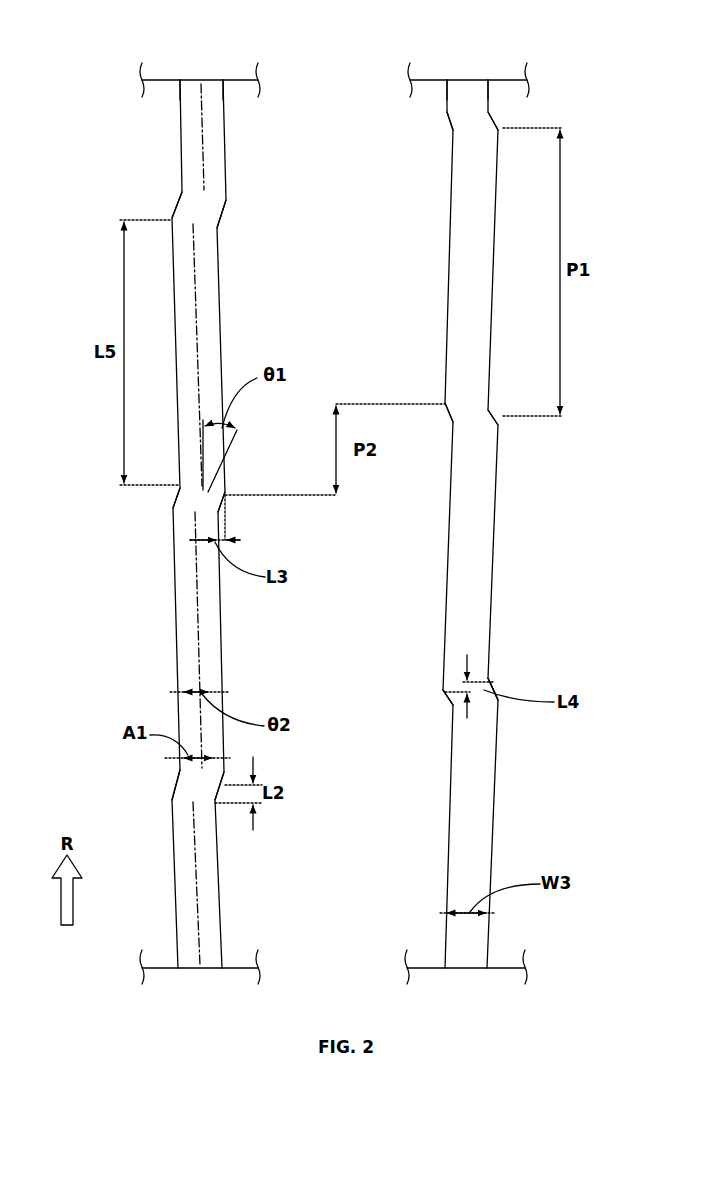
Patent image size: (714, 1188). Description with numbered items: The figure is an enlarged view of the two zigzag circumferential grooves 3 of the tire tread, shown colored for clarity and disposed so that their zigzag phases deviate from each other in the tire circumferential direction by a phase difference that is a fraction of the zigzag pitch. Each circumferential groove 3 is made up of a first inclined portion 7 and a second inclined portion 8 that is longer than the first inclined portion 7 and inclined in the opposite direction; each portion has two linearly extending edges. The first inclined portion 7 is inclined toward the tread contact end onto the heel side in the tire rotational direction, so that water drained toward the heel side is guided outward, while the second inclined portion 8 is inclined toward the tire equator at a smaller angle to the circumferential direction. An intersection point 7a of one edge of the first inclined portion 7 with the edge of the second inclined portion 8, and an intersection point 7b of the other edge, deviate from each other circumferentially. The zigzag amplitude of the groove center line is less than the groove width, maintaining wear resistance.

The circumferential groove 3 is at (212, 102).
The first inclined portion 7 is at (213, 216).
The intersection point 7a is at (448, 692).
The intersection point 7b is at (492, 682).
The second inclined portion 8 is at (214, 160).